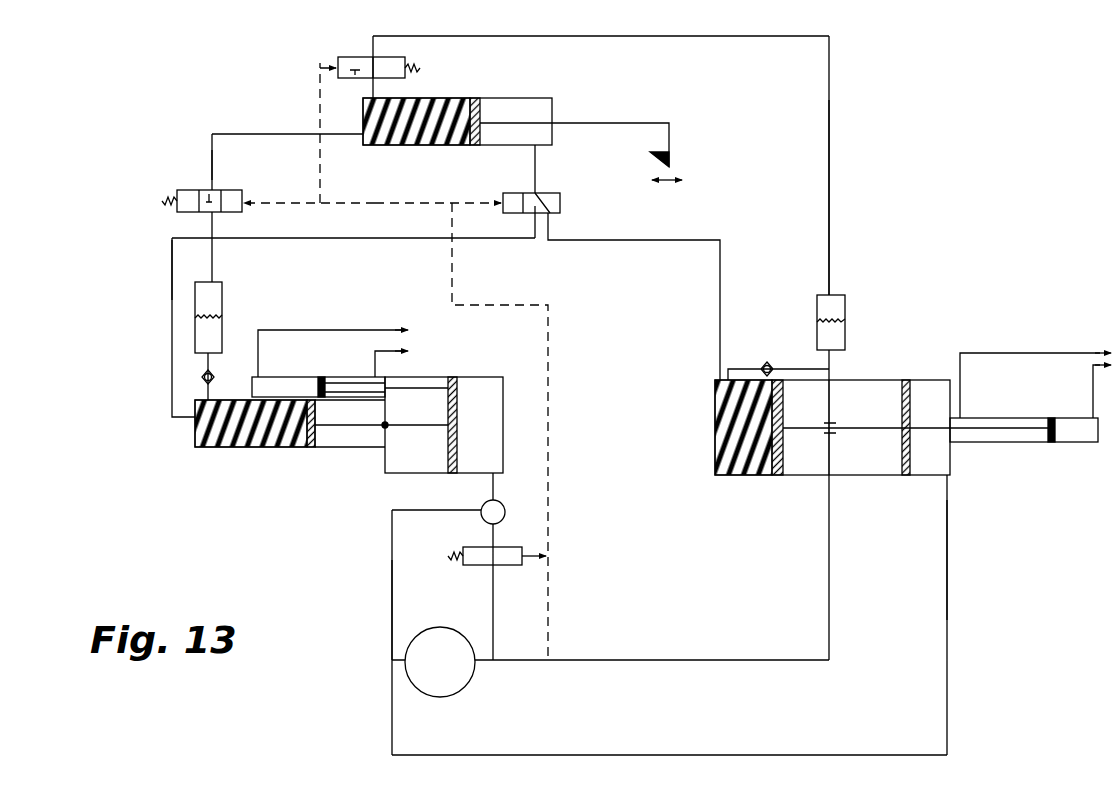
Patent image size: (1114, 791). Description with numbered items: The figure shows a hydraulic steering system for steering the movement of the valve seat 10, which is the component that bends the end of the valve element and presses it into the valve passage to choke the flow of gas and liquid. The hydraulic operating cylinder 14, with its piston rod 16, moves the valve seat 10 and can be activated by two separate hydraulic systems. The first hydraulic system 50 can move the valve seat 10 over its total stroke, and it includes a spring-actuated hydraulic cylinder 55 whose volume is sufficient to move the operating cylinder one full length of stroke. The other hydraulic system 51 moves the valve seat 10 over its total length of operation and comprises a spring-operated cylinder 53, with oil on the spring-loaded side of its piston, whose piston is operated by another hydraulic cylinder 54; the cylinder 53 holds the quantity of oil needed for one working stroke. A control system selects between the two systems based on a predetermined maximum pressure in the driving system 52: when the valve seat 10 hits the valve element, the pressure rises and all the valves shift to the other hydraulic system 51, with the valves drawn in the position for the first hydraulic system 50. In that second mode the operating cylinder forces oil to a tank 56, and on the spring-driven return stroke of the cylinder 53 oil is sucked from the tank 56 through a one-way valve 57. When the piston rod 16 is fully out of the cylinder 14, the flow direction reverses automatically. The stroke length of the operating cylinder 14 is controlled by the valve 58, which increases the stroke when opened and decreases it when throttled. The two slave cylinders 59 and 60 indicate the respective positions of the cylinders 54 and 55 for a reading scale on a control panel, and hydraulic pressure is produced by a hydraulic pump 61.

The valve seat 10 is at (672, 157).
The hydraulic operating cylinder 14 is at (457, 100).
The piston rod 16 is at (572, 122).
The first hydraulic system 50 is at (680, 237).
The other hydraulic system 51 is at (172, 248).
The driving system 52 is at (493, 603).
The spring-operated cylinder 53 is at (262, 450).
The hydraulic cylinder 54 is at (410, 455).
The spring-actuated hydraulic cylinder 55 is at (760, 478).
The tank 56 is at (195, 302).
The one-way valve 57 is at (203, 380).
The valve 58 is at (490, 515).
The slave cylinder 59 is at (252, 380).
The slave cylinder 60 is at (1012, 443).
The hydraulic pump 61 is at (418, 672).